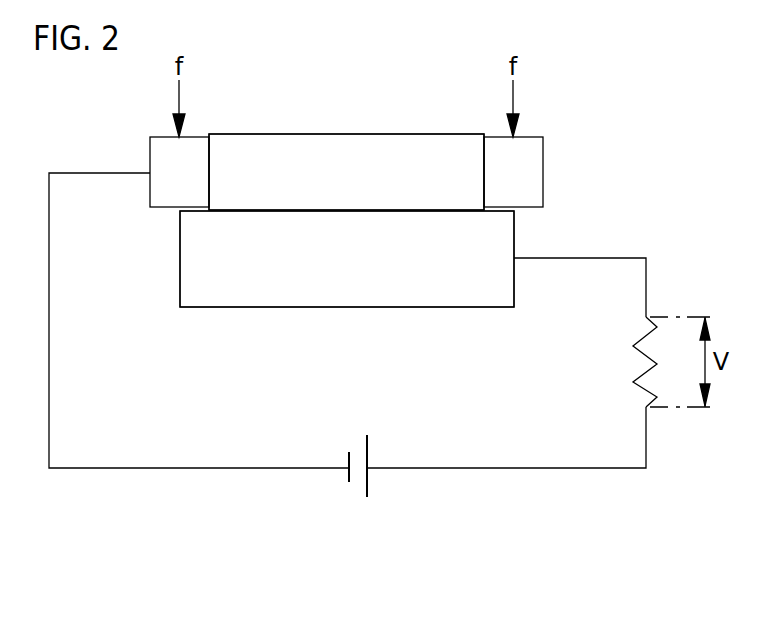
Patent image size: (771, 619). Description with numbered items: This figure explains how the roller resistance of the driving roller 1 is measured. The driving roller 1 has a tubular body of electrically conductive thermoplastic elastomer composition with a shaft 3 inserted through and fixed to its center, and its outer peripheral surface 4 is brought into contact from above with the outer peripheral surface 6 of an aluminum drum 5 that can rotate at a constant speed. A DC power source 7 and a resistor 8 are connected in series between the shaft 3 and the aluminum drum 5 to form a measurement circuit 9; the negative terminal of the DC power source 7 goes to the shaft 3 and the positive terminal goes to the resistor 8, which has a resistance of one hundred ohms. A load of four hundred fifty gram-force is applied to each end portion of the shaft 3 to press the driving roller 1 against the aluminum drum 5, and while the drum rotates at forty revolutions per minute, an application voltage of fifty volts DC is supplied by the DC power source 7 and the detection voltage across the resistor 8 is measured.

The driving roller 1 is at (274, 133).
The shaft 3 is at (531, 173).
The outer peripheral surface 4 is at (386, 145).
The aluminum drum 5 is at (305, 308).
The outer peripheral surface 6 is at (373, 281).
The DC power source 7 is at (357, 493).
The resistor 8 is at (633, 366).
The measurement circuit 9 is at (129, 469).